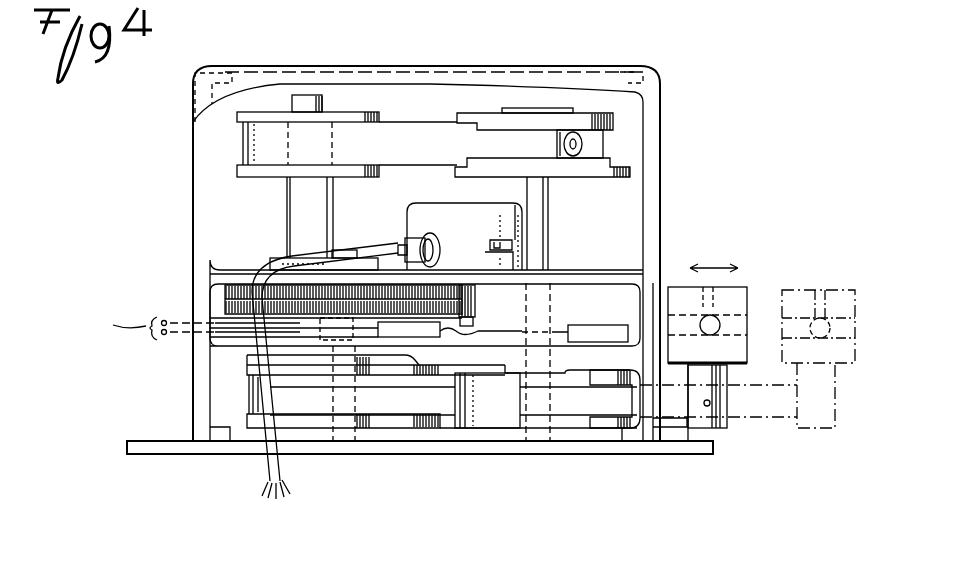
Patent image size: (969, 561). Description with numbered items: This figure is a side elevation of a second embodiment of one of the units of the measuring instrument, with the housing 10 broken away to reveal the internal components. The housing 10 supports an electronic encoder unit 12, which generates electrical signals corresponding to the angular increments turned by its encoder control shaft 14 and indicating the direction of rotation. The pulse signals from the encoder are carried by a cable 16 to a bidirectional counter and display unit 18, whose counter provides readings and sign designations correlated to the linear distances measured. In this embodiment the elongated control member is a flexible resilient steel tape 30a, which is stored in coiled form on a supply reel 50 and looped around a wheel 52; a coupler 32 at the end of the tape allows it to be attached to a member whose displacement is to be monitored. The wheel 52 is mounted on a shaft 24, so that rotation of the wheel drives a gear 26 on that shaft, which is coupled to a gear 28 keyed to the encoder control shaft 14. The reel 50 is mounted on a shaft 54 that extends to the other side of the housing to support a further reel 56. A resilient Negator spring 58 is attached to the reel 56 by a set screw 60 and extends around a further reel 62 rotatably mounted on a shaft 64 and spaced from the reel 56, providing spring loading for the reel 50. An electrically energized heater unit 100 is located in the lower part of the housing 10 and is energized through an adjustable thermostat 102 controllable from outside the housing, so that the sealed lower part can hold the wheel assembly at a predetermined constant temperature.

The housing 10 is at (203, 220).
The electronic encoder unit 12 is at (407, 216).
The encoder control shaft 14 is at (452, 277).
The cable 16 is at (267, 463).
The bidirectional counter and display unit 18 is at (292, 503).
The shaft 24 is at (330, 392).
The gear 26 is at (226, 296).
The gear 28 is at (475, 304).
The flexible resilient steel tape 30a is at (672, 413).
The coupler 32 is at (735, 292).
The supply reel 50 is at (590, 372).
The wheel 52 is at (308, 424).
The shaft 54 is at (540, 242).
The further reel 56 is at (613, 122).
The Negator spring 58 is at (408, 130).
The set screw 60 is at (578, 140).
The further reel 62 is at (258, 112).
The shaft 64 is at (320, 96).
The heater unit 100 is at (597, 323).
The adjustable thermostat 102 is at (412, 352).